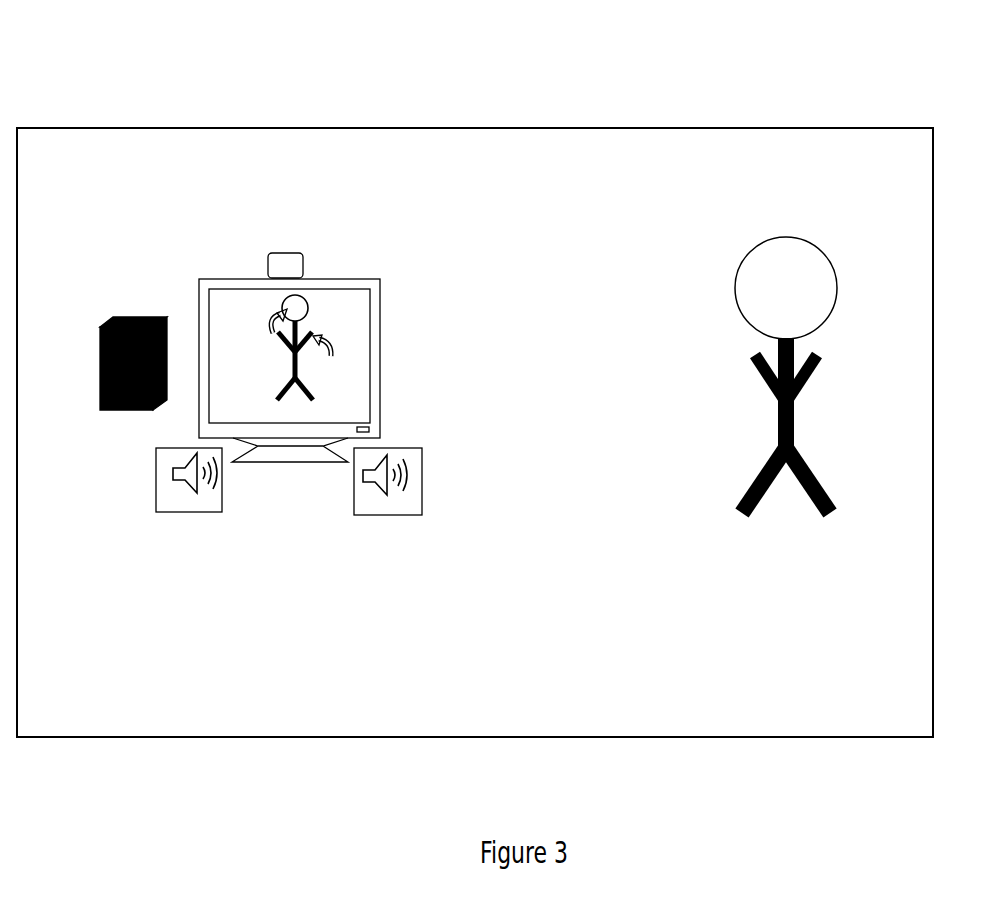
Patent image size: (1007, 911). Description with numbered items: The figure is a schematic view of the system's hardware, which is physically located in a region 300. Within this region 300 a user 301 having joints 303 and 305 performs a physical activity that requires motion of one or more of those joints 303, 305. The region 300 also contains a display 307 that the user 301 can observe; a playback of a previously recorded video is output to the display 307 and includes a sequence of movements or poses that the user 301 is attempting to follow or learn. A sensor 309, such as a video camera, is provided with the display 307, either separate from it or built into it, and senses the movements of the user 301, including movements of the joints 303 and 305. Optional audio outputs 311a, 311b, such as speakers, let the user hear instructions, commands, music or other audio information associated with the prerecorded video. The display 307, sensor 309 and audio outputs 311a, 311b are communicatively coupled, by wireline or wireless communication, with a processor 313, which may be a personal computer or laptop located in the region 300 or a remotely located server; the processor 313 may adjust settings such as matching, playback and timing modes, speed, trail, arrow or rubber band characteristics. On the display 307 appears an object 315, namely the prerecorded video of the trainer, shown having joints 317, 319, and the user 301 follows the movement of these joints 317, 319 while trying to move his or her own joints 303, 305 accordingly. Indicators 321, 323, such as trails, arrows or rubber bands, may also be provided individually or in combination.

The region 300 is at (355, 128).
The user 301 is at (838, 290).
The joint 303 is at (826, 360).
The joint 305 is at (752, 360).
The display 307 is at (208, 288).
The sensor 309 is at (268, 258).
The audio output 311a is at (156, 512).
The audio output 311b is at (380, 515).
The processor 313 is at (100, 388).
The object 315 is at (307, 316).
The joint 317 is at (313, 333).
The joint 319 is at (277, 333).
The indicator 321 is at (282, 312).
The indicator 323 is at (331, 355).